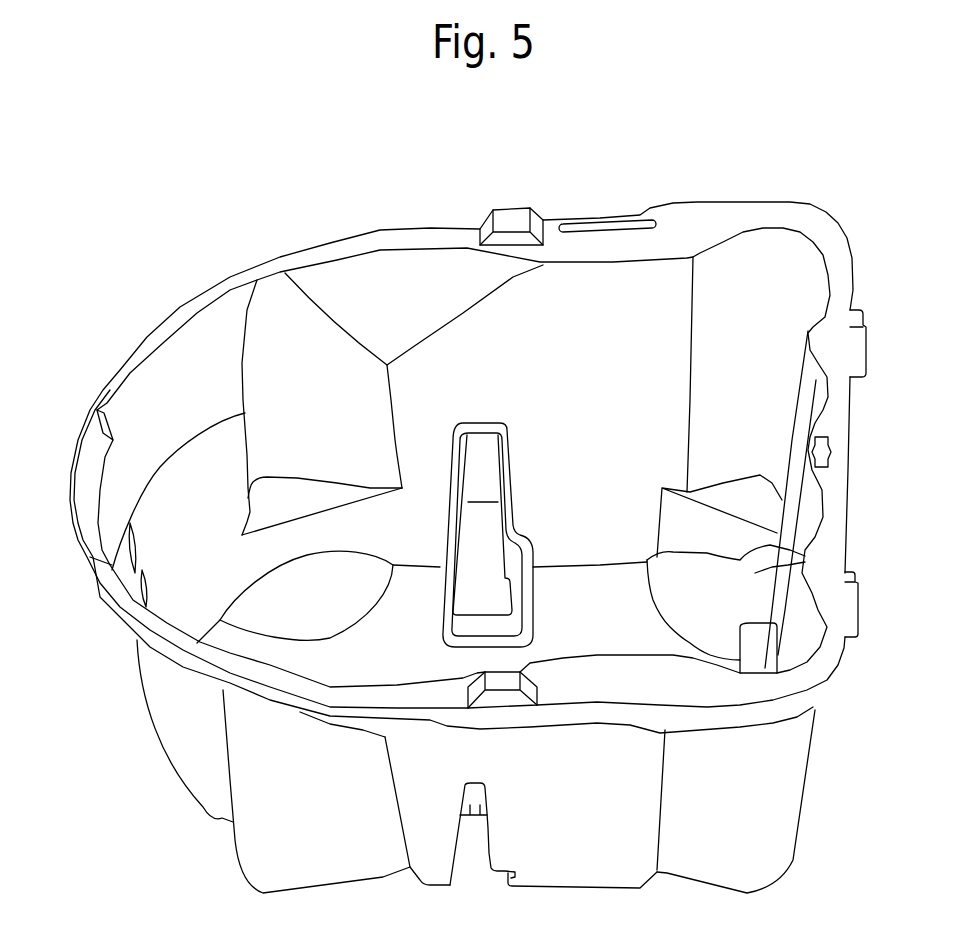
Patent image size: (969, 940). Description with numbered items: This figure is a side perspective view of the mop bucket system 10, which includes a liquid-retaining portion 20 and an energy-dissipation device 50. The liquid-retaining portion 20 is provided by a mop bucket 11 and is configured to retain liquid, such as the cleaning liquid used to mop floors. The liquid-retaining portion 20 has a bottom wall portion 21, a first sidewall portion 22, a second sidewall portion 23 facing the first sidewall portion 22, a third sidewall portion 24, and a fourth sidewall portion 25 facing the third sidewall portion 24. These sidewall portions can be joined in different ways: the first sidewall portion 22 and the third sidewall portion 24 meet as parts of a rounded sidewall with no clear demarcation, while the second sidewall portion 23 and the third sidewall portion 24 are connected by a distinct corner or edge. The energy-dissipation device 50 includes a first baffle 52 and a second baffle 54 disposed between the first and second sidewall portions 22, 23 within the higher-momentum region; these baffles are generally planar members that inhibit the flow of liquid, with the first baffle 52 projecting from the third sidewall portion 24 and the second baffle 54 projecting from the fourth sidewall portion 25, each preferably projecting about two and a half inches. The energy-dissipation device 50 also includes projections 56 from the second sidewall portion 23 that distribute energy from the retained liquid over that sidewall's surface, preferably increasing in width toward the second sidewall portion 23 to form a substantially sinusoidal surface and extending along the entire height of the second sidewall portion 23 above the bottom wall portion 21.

The mop bucket system 10 is at (563, 154).
The mop bucket 11 is at (796, 762).
The liquid-retaining portion 20 is at (794, 786).
The bottom wall portion 21 is at (418, 636).
The first sidewall portion 22 is at (78, 513).
The second sidewall portion 23 is at (838, 460).
The third sidewall portion 24 is at (445, 226).
The fourth sidewall portion 25 is at (333, 698).
The energy-dissipation device 50 is at (485, 472).
The first baffle 52 is at (490, 490).
The second baffle 54 is at (477, 815).
The projections 56 is at (813, 337).